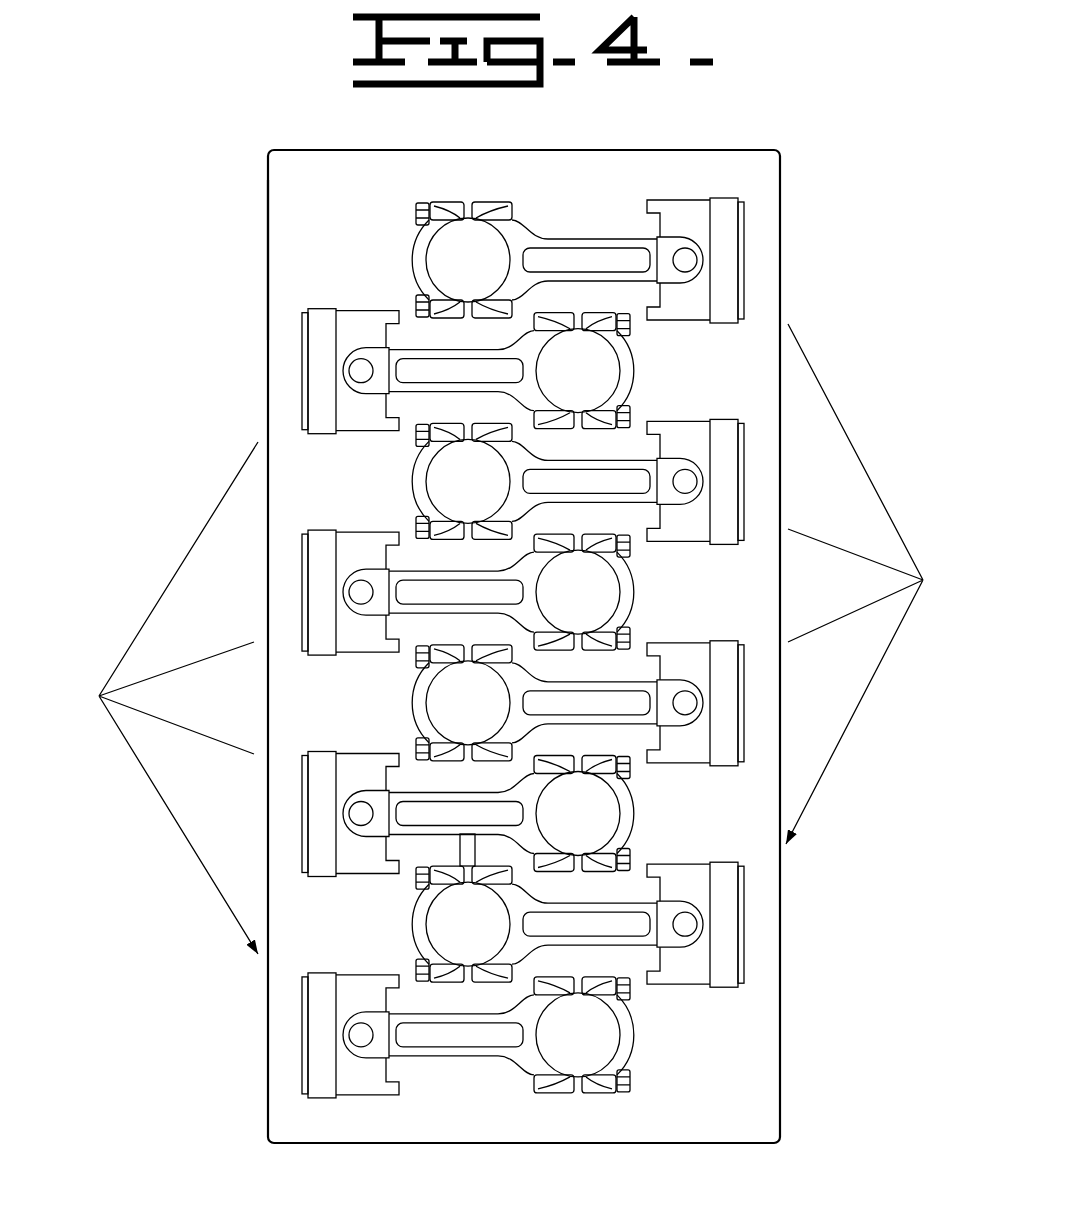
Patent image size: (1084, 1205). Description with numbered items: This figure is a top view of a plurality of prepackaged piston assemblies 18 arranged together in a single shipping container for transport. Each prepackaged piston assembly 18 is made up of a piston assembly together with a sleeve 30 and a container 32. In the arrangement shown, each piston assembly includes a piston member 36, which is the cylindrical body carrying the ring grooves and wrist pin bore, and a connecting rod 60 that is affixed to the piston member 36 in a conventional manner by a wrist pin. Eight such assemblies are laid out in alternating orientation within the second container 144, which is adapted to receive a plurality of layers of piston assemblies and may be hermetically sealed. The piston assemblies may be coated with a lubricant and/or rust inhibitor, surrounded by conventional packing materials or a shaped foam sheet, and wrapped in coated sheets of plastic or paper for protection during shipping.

The prepackaged piston assembly 18 is at (509, 639).
The sleeve 30 is at (327, 980).
The container 32 is at (720, 165).
The piston member 36 is at (672, 222).
The connecting rod 60 is at (543, 927).
The second container 144 is at (268, 258).